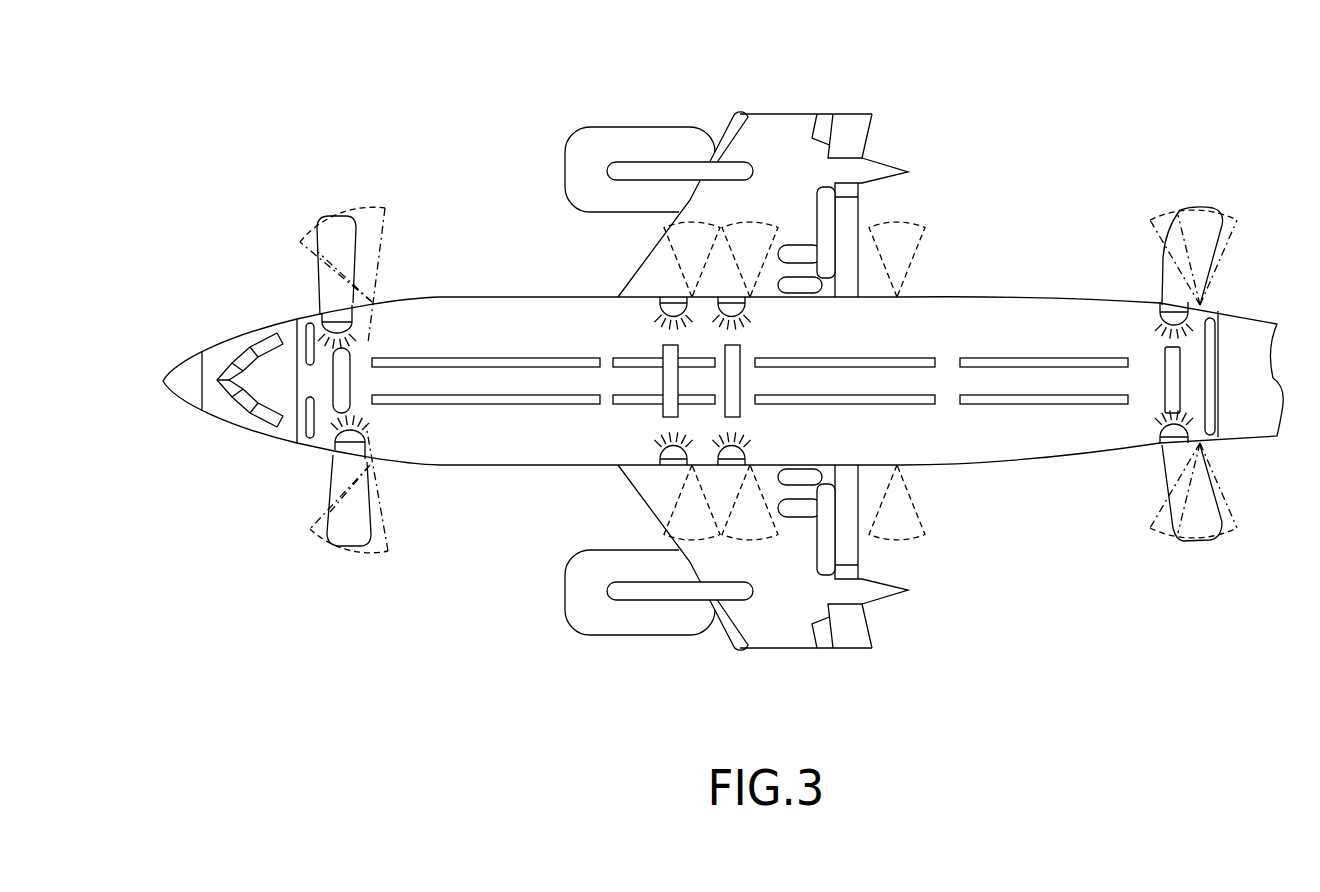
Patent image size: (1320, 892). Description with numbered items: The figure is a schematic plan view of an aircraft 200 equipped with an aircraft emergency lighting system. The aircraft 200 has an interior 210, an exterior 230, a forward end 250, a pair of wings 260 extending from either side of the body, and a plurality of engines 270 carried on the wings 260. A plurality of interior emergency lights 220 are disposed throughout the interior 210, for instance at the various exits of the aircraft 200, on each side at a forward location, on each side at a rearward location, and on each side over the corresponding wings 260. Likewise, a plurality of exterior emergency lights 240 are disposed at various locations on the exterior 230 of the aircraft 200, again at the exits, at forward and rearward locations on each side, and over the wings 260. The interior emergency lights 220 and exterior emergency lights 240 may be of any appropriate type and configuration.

The aircraft 200 is at (1095, 142).
The interior 210 is at (493, 445).
The interior emergency lights 220 is at (360, 322).
The exterior 230 is at (426, 165).
The exterior emergency lights 240 is at (371, 301).
The forward end 250 is at (176, 378).
The wings 260 is at (772, 153).
The engines 270 is at (615, 127).